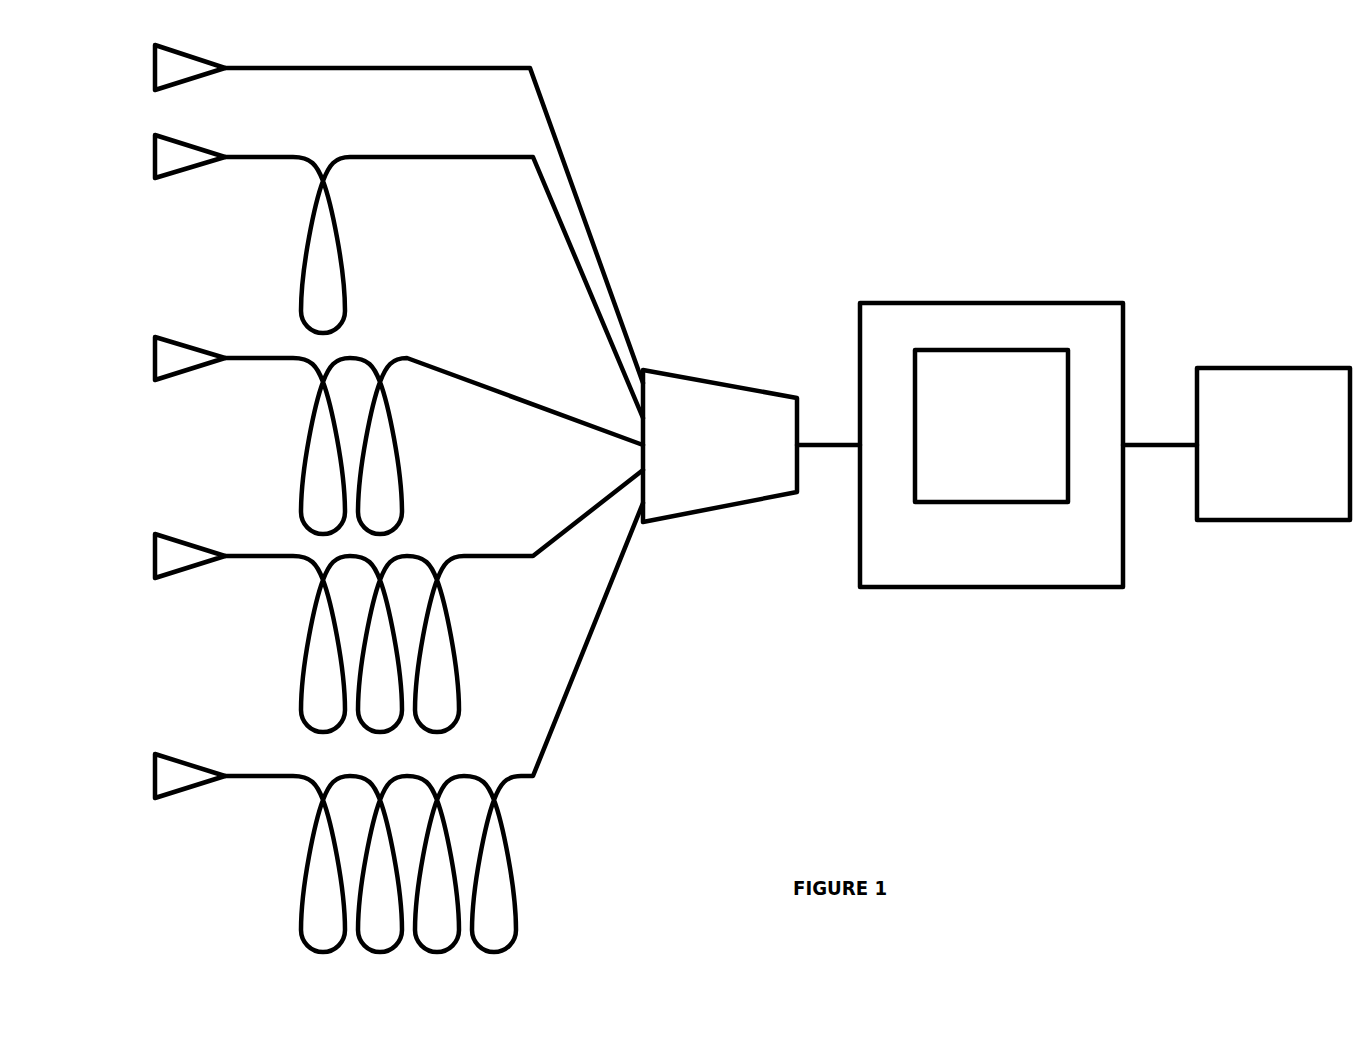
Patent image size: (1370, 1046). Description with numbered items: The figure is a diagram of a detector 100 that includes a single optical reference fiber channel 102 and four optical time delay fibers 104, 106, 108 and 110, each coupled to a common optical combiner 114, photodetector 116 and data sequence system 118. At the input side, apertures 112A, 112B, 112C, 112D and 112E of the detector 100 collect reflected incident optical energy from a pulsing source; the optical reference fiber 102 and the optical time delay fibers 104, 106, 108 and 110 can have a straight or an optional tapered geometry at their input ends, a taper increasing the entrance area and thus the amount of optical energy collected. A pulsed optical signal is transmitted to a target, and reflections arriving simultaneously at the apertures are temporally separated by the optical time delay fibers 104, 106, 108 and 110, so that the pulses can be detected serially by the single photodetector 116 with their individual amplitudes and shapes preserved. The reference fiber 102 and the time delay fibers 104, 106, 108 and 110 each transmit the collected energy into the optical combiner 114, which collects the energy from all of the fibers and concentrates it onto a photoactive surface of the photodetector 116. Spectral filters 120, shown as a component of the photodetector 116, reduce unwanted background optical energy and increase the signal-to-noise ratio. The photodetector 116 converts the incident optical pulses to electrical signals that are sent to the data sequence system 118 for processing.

The detector 100 is at (982, 857).
The optical reference fiber channel 102 is at (434, 225).
The optical time delay fiber 104 is at (434, 287).
The optical time delay fiber 106 is at (434, 446).
The optical time delay fiber 108 is at (434, 601).
The optical time delay fiber 110 is at (434, 727).
The aperture 112A is at (190, 78).
The aperture 112B is at (189, 174).
The aperture 112C is at (190, 346).
The aperture 112D is at (189, 572).
The aperture 112E is at (190, 795).
The optical combiner 114 is at (751, 446).
The photodetector 116 is at (1028, 445).
The data sequence system 118 is at (1273, 444).
The spectral filters 120 is at (991, 426).